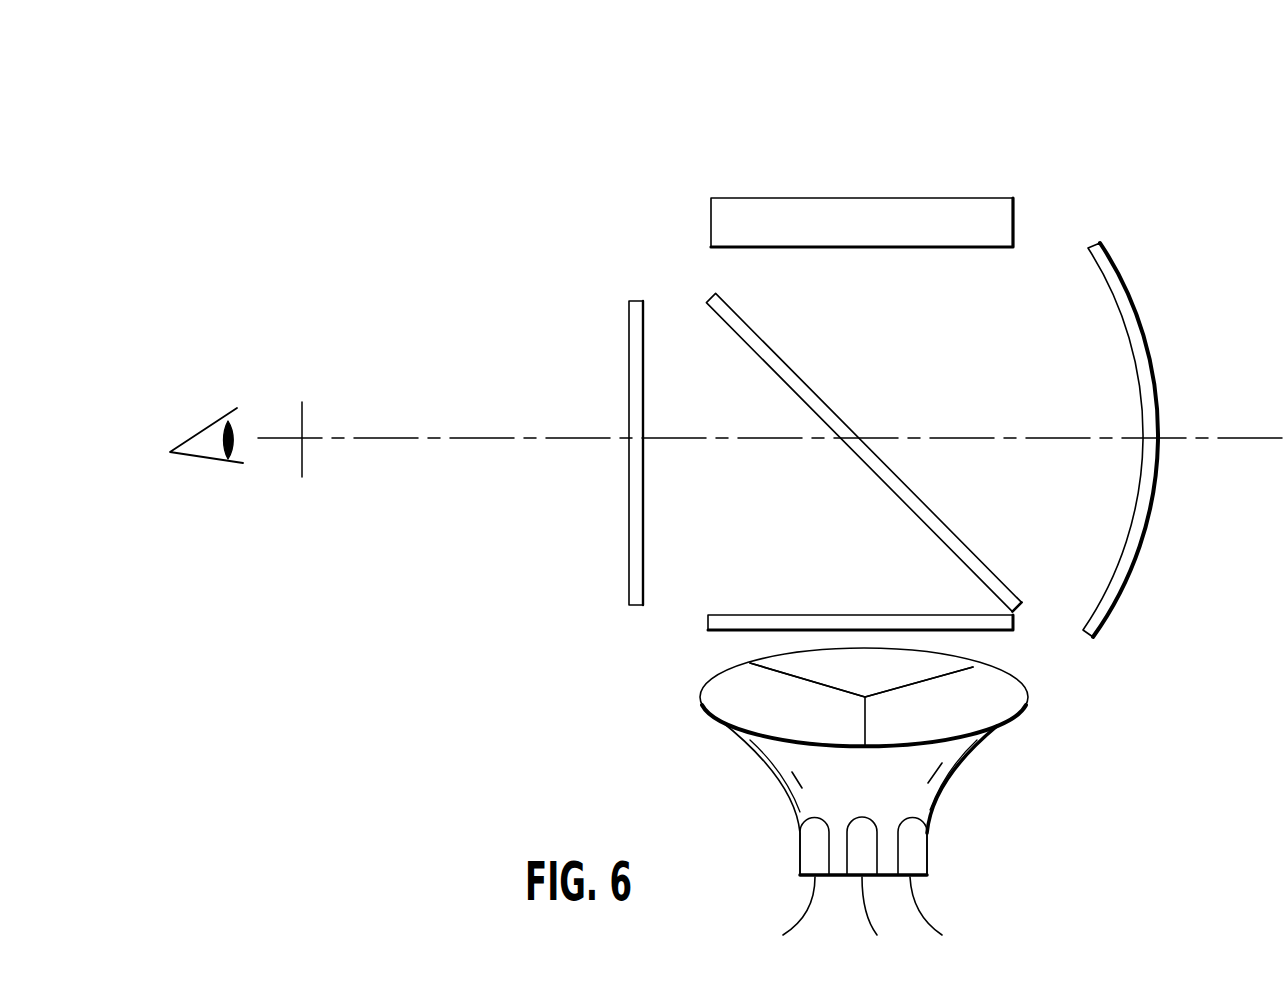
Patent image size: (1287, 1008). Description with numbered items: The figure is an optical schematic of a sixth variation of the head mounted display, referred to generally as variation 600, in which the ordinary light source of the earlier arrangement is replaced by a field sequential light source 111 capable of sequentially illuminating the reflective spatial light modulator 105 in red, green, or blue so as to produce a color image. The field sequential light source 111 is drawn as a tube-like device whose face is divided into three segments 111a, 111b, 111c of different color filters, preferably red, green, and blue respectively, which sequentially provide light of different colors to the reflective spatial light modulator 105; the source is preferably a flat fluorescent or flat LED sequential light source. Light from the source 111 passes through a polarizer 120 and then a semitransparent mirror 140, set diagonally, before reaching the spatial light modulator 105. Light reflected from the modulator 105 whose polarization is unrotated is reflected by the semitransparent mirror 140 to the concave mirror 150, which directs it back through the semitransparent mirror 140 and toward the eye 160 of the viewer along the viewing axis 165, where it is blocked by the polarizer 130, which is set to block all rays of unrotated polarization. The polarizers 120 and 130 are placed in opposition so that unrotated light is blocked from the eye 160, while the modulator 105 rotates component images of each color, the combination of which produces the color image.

The head mounted display variation 600 is at (1132, 148).
The reflective spatial light modulator 105 is at (847, 205).
The semitransparent mirror 140 is at (712, 294).
The polarizer 130 is at (630, 608).
The polarizer 120 is at (708, 622).
The concave mirror 150 is at (1140, 323).
The eye 160 is at (198, 420).
The viewing axis 165 is at (1230, 440).
The field sequential light source 111 is at (892, 791).
The color filter segment 111a is at (710, 705).
The color filter segment 111b is at (920, 662).
The color filter segment 111c is at (995, 706).